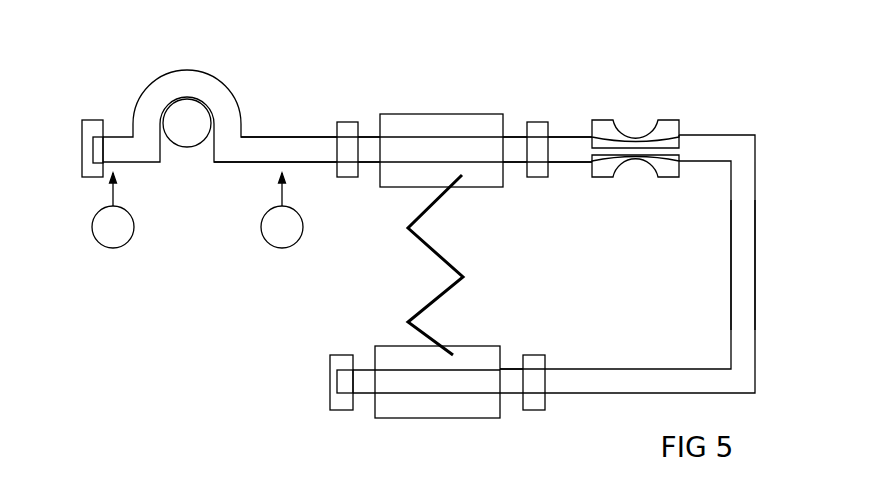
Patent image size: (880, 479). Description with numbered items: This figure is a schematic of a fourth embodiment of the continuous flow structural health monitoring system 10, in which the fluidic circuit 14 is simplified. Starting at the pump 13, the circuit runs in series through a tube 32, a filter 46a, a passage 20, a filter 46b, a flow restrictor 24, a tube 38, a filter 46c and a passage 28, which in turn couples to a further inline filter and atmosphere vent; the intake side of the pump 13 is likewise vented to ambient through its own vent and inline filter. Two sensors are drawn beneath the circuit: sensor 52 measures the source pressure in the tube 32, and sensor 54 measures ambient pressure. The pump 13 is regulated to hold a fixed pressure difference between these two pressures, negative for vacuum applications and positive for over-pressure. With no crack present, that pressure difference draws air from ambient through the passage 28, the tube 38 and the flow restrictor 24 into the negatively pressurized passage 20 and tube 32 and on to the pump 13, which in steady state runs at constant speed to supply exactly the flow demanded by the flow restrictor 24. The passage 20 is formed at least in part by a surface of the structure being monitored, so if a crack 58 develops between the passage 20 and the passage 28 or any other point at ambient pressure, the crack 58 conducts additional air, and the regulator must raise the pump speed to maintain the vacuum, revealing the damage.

The continuous flow structural health monitoring system 10 is at (140, 318).
The pump 13 is at (198, 100).
The fluidic circuit 14 is at (740, 130).
The passage 20 is at (450, 114).
The flow restrictor 24 is at (668, 118).
The passage 28 is at (460, 418).
The tube 32 is at (303, 137).
The tube 38 is at (755, 267).
The filter 46a is at (343, 122).
The filter 46b is at (538, 122).
The filter 46c is at (542, 410).
The sensor 52 is at (288, 246).
The sensor 54 is at (100, 243).
The crack 58 is at (443, 253).